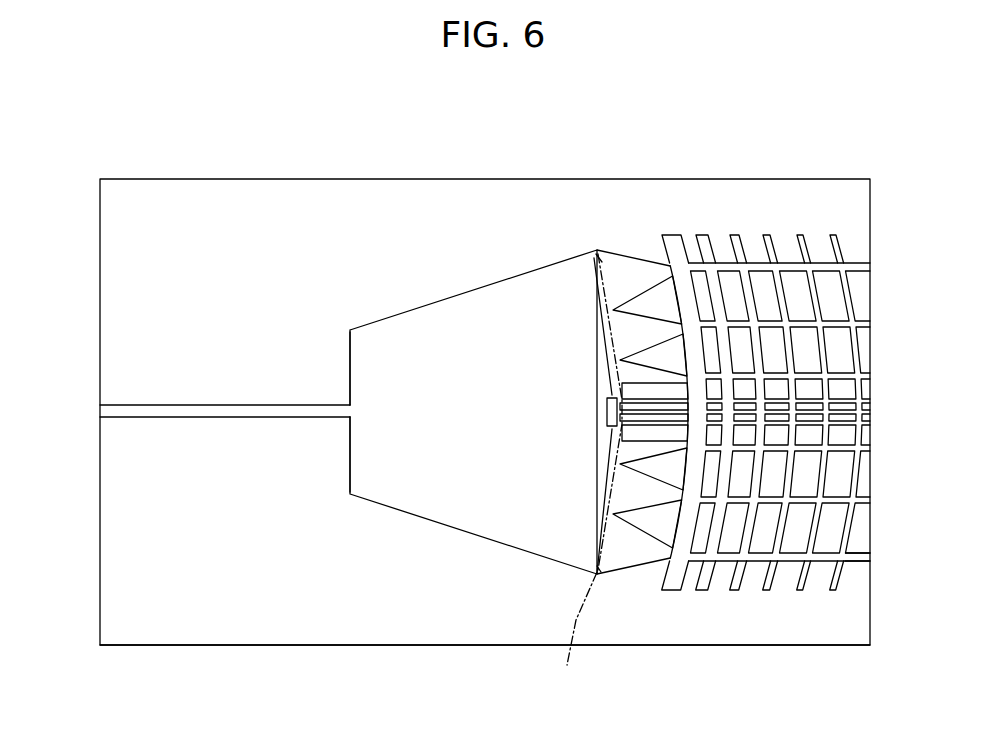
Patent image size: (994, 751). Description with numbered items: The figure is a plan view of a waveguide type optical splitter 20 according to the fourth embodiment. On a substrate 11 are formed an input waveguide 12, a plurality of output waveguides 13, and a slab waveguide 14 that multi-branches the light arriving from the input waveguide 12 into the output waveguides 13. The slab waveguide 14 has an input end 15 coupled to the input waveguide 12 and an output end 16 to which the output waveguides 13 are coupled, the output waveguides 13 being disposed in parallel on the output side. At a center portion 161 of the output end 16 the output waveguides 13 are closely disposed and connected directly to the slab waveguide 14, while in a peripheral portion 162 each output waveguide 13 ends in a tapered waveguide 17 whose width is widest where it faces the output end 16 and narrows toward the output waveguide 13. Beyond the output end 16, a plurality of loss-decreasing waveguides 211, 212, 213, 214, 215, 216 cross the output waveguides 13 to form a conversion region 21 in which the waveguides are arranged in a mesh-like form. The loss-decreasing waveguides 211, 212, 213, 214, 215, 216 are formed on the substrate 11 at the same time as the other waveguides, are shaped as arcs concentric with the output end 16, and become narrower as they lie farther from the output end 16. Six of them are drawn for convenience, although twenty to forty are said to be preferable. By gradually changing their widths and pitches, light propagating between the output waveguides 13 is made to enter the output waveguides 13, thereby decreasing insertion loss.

The waveguide type optical splitter 20 is at (190, 165).
The substrate 11 is at (235, 612).
The input waveguide 12 is at (127, 405).
The output waveguides 13 is at (857, 560).
The slab waveguide 14 is at (470, 518).
The input end 15 is at (352, 462).
The output end 16 is at (586, 472).
The center portion 161 is at (606, 408).
The peripheral portion 162 is at (600, 328).
The tapered waveguide 17 is at (645, 572).
The conversion region 21 is at (825, 116).
The loss-decreasing waveguide 211 is at (668, 235).
The loss-decreasing waveguide 212 is at (701, 235).
The loss-decreasing waveguide 213 is at (734, 235).
The loss-decreasing waveguide 214 is at (767, 235).
The loss-decreasing waveguide 215 is at (800, 235).
The loss-decreasing waveguide 216 is at (833, 235).